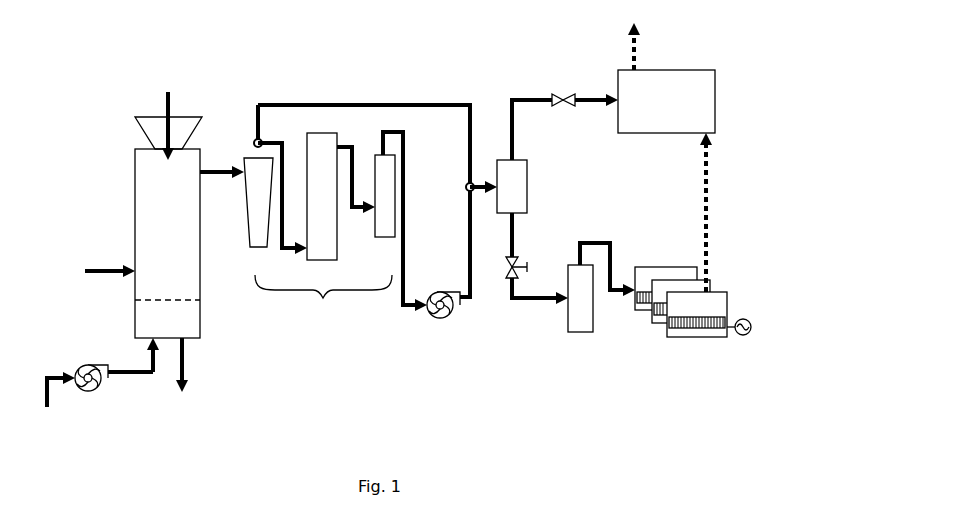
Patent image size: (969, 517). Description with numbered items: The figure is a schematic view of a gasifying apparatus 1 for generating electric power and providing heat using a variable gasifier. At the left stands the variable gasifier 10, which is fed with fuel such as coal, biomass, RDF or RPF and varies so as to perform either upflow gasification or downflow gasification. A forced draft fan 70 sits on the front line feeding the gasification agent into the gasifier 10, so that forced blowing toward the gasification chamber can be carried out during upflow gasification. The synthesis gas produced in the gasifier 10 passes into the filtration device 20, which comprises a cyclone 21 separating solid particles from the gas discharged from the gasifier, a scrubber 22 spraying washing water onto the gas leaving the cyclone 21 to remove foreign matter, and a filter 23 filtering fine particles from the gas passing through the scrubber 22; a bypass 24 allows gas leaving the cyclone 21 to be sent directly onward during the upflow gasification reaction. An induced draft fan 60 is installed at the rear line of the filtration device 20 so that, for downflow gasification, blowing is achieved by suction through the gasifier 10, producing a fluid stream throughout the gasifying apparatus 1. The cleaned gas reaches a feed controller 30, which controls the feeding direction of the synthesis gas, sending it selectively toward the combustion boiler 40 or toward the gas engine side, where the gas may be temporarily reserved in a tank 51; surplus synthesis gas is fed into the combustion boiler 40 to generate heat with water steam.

The gasifying apparatus 1 is at (238, 72).
The variable gasifier 10 is at (164, 242).
The filtration device 20 is at (698, 338).
The cyclone 21 is at (254, 209).
The scrubber 22 is at (341, 196).
The filter 23 is at (377, 165).
The bypass 24 is at (410, 104).
The feed controller 30 is at (521, 186).
The combustion boiler 40 is at (666, 157).
The tank 51 is at (573, 320).
The induced draft fan 60 is at (444, 319).
The forced draft fan 70 is at (88, 391).